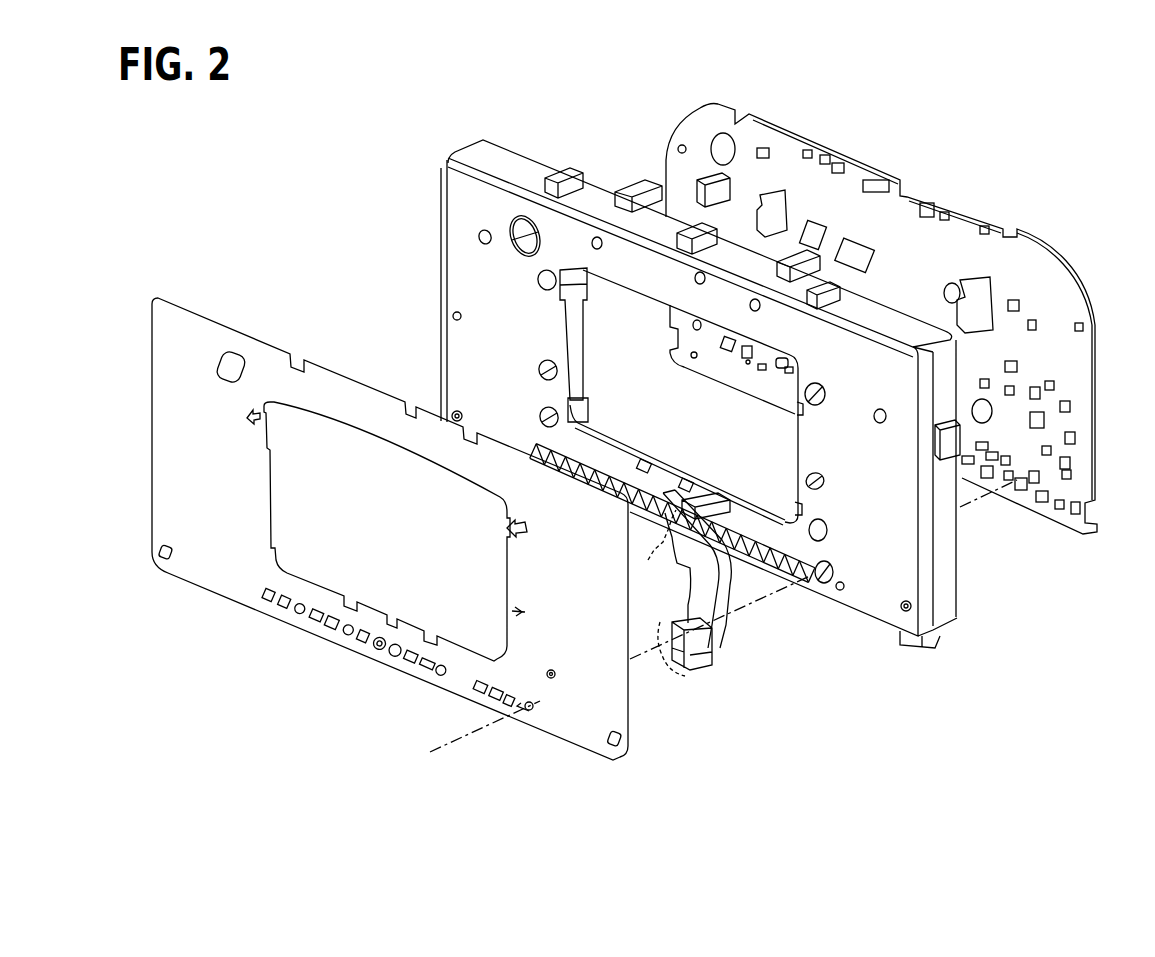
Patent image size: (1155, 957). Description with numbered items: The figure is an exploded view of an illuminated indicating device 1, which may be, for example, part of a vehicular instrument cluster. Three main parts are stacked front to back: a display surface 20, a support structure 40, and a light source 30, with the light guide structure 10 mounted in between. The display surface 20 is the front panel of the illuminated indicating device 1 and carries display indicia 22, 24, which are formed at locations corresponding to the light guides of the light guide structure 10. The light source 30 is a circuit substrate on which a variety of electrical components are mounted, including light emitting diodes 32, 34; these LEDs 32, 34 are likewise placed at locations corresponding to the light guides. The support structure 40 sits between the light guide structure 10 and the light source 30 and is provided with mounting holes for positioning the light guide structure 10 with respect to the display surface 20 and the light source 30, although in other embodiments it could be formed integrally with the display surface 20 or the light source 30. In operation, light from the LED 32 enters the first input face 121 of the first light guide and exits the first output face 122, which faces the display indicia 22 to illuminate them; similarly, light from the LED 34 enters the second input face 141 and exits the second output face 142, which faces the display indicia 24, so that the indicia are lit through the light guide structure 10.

The illuminated indicating device 1 is at (1043, 136).
The light guide structure 10 is at (713, 668).
The display surface 20 is at (617, 762).
The display indicia 22 is at (527, 712).
The display indicia 24 is at (507, 528).
The light source 30 is at (1097, 522).
The light emitting diode 32 is at (1039, 477).
The light emitting diode 34 is at (1019, 305).
The support structure 40 is at (930, 647).
The first input face 121 is at (730, 598).
The first output face 122 is at (665, 655).
The second input face 141 is at (712, 497).
The second output face 142 is at (655, 556).